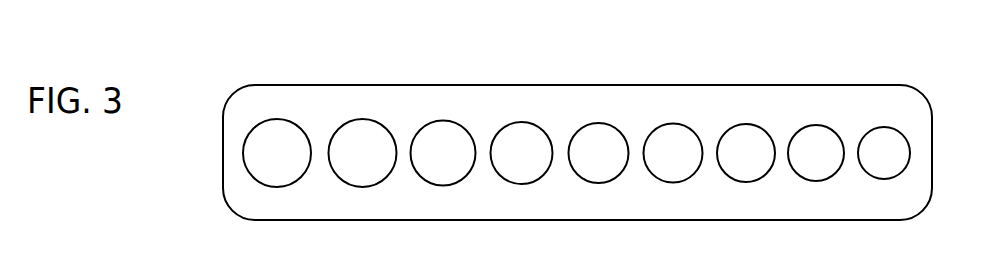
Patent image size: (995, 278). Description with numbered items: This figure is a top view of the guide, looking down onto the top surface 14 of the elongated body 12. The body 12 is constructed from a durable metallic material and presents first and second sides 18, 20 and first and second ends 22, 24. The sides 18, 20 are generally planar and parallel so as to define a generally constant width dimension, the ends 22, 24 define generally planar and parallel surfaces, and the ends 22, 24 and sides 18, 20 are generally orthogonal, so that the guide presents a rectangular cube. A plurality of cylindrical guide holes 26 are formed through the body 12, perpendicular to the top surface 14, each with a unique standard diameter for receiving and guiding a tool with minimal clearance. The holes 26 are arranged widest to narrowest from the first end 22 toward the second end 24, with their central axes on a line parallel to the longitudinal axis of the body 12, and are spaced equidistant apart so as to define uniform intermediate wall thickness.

The elongated body 12 is at (0, 275).
The top surface 14 is at (612, 94).
The first side 18 is at (692, 85).
The second side 20 is at (633, 220).
The first end 22 is at (223, 145).
The second end 24 is at (932, 152).
The guide hole 26 is at (378, 169).